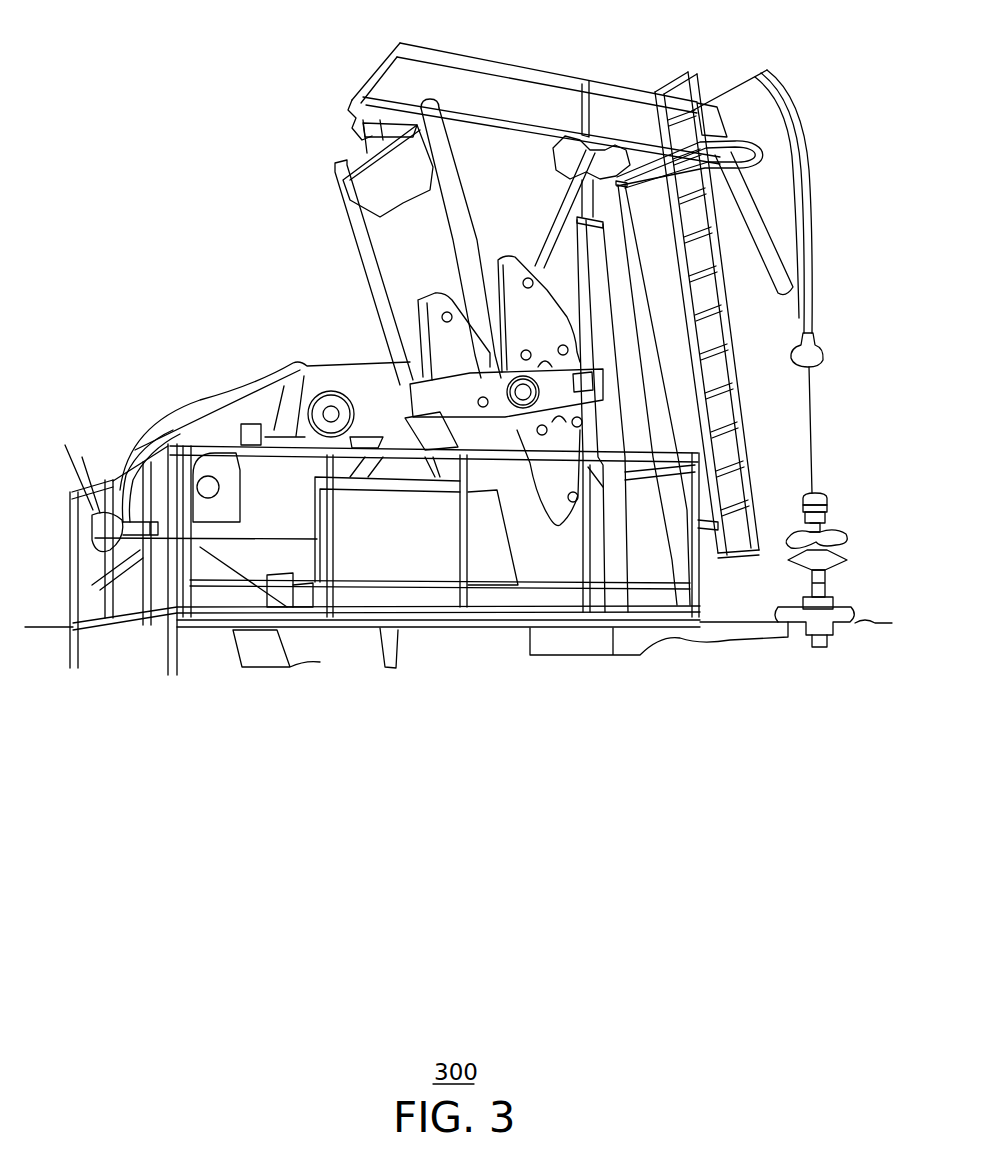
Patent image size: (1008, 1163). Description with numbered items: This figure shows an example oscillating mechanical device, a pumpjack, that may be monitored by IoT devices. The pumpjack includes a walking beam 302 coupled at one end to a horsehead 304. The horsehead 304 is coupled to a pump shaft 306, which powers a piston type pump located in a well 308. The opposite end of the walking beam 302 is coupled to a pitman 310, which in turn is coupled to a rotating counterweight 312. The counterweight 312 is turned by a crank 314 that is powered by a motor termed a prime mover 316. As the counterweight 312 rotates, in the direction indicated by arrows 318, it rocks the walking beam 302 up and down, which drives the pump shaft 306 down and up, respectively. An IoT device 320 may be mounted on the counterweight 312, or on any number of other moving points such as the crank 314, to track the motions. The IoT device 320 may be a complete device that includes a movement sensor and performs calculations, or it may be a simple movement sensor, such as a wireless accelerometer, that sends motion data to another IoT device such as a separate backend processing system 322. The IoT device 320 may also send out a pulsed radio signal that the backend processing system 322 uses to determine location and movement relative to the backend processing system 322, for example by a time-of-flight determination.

The walking beam 302 is at (527, 68).
The horsehead 304 is at (790, 86).
The pump shaft 306 is at (811, 408).
The well 308 is at (823, 583).
The pitman 310 is at (455, 229).
The counterweight 312 is at (468, 256).
The crank 314 is at (447, 387).
The prime mover 316 is at (173, 433).
The arrows 318 is at (530, 245).
The IoT device 320 is at (557, 204).
The backend processing system 322 is at (253, 423).